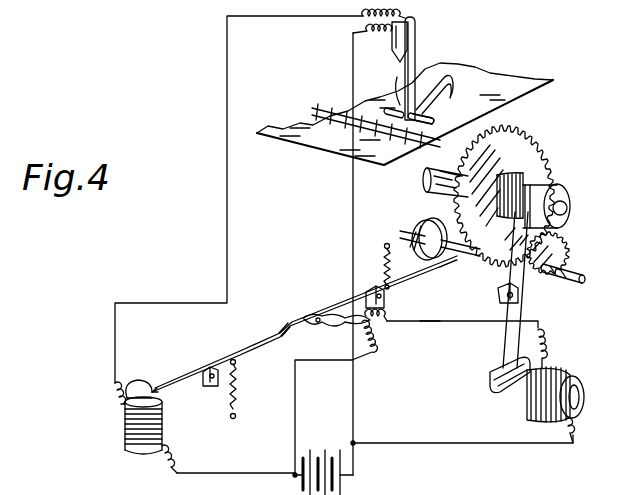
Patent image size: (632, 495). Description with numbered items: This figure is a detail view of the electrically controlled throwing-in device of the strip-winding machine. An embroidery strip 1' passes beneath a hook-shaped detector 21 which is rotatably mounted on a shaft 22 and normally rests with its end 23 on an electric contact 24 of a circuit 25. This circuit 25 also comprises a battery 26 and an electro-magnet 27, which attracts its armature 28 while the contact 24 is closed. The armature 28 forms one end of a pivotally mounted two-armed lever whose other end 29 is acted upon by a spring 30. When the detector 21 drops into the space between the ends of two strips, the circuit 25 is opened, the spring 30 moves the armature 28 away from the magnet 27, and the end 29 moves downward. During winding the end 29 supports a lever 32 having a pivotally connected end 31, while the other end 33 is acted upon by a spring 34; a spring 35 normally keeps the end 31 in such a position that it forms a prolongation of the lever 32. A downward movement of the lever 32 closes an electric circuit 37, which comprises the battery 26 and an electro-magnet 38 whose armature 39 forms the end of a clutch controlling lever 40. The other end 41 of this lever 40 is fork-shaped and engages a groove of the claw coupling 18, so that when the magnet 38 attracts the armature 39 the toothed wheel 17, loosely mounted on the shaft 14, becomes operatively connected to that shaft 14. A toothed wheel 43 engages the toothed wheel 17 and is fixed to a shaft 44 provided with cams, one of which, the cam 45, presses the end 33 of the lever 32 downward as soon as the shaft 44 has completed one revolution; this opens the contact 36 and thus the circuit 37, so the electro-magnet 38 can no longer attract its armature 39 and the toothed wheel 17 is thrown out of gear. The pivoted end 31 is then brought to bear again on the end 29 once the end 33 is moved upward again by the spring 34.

The strip 1' is at (410, 110).
The shaft 14 is at (427, 182).
The toothed wheel 17 is at (510, 144).
The claw coupling 18 is at (520, 178).
The hook-shaped detector 21 is at (421, 112).
The shaft 22 is at (397, 77).
The end of detector 23 is at (416, 32).
The electric contact 24 is at (392, 47).
The circuit 25 is at (227, 248).
The battery 26 is at (317, 455).
The electro-magnet 27 is at (124, 428).
The armature 28 is at (152, 382).
The end of lever 29 is at (254, 349).
The spring 30 is at (228, 410).
The pivotally connected end 31 is at (300, 320).
The lever 32 is at (330, 303).
The end of lever 33 is at (428, 275).
The spring 34 is at (385, 275).
The spring 35 is at (322, 322).
The contact 36 is at (340, 324).
The electric circuit 37 is at (434, 323).
The electro-magnet 38 is at (542, 405).
The armature 39 is at (495, 386).
The clutch controlling lever 40 is at (510, 330).
The fork-shaped end 41 is at (565, 218).
The toothed wheel 43 is at (547, 290).
The shaft 44 is at (561, 268).
The cam 45 is at (424, 232).